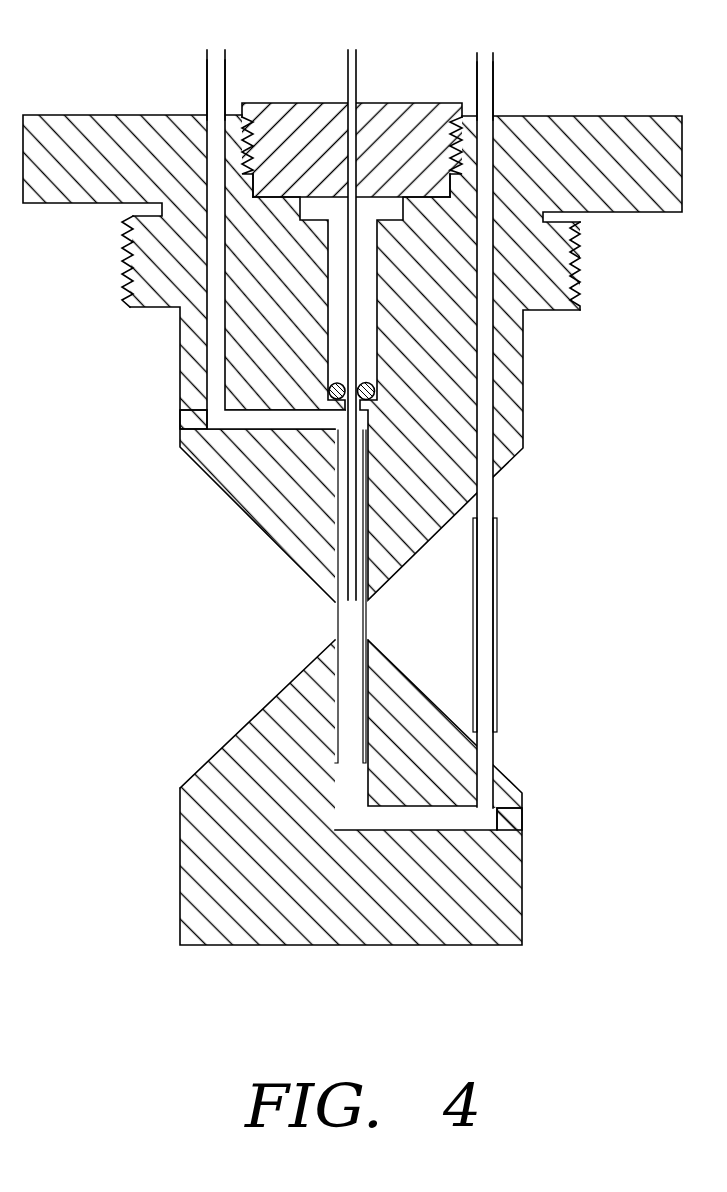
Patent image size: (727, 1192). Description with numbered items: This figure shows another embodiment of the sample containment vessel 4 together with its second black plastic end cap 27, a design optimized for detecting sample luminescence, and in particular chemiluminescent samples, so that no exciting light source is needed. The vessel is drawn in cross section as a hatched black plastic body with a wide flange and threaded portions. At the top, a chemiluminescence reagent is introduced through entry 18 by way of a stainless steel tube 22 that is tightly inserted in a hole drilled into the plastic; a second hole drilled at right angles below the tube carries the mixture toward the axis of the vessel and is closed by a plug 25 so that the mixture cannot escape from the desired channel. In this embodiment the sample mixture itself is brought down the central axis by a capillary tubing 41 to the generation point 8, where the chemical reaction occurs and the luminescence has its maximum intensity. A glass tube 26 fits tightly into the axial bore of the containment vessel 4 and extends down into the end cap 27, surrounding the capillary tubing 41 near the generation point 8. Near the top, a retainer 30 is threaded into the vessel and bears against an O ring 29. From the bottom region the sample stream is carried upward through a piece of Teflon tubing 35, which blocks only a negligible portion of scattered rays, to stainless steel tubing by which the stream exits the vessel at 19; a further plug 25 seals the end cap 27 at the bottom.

The sample containment vessel 4 is at (172, 361).
The generation point 8 is at (360, 628).
The sample entry 18 is at (217, 50).
The sample exit 19 is at (487, 52).
The stainless steel tube 22 is at (205, 93).
The plug 25 is at (182, 414).
The glass tube 26 is at (335, 615).
The second black plastic end cap 27 is at (238, 709).
The O ring 29 is at (373, 385).
The retainer 30 is at (300, 103).
The Teflon tubing 35 is at (498, 665).
The capillary tubing 41 is at (347, 68).